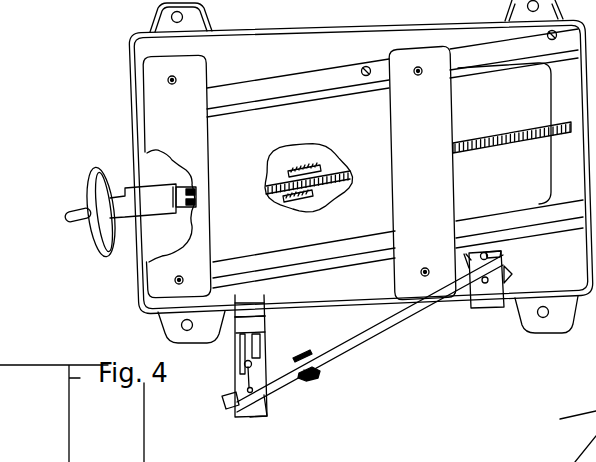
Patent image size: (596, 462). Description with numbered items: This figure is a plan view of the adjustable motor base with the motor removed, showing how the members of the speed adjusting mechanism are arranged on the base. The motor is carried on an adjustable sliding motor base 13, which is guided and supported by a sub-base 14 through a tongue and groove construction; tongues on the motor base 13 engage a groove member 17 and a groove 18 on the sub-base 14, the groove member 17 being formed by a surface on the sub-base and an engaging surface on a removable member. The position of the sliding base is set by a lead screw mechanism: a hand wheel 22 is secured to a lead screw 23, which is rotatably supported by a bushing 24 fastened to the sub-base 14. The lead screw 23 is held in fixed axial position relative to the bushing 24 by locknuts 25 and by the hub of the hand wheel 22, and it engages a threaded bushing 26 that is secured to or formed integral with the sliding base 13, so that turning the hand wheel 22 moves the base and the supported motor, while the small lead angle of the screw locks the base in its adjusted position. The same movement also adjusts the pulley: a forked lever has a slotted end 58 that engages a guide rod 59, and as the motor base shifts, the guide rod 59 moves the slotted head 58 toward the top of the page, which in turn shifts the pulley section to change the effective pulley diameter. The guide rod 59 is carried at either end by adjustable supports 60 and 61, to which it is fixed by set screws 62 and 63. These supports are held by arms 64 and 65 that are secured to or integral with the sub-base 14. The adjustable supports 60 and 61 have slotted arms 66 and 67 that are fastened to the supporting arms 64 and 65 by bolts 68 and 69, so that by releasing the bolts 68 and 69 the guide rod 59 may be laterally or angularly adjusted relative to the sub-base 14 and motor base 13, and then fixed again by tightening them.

The adjustable sliding motor base 13 is at (140, 80).
The sub-base 14 is at (276, 38).
The groove member 17 is at (470, 63).
The groove 18 is at (487, 220).
The hand wheel 22 is at (87, 178).
The lead screw 23 is at (474, 153).
The bushing 24 is at (134, 196).
The locknuts 25 is at (175, 185).
The threaded bushing 26 is at (292, 186).
The slotted end 58 is at (313, 379).
The guide rod 59 is at (338, 351).
The adjustable support 60 is at (249, 370).
The adjustable support 61 is at (502, 285).
The set screw 62 is at (264, 402).
The set screw 63 is at (488, 280).
The arm 64 is at (262, 302).
The arm 65 is at (500, 254).
The slotted arm 66 is at (236, 353).
The slotted arm 67 is at (512, 272).
The bolt 68 is at (245, 366).
The bolt 69 is at (486, 253).